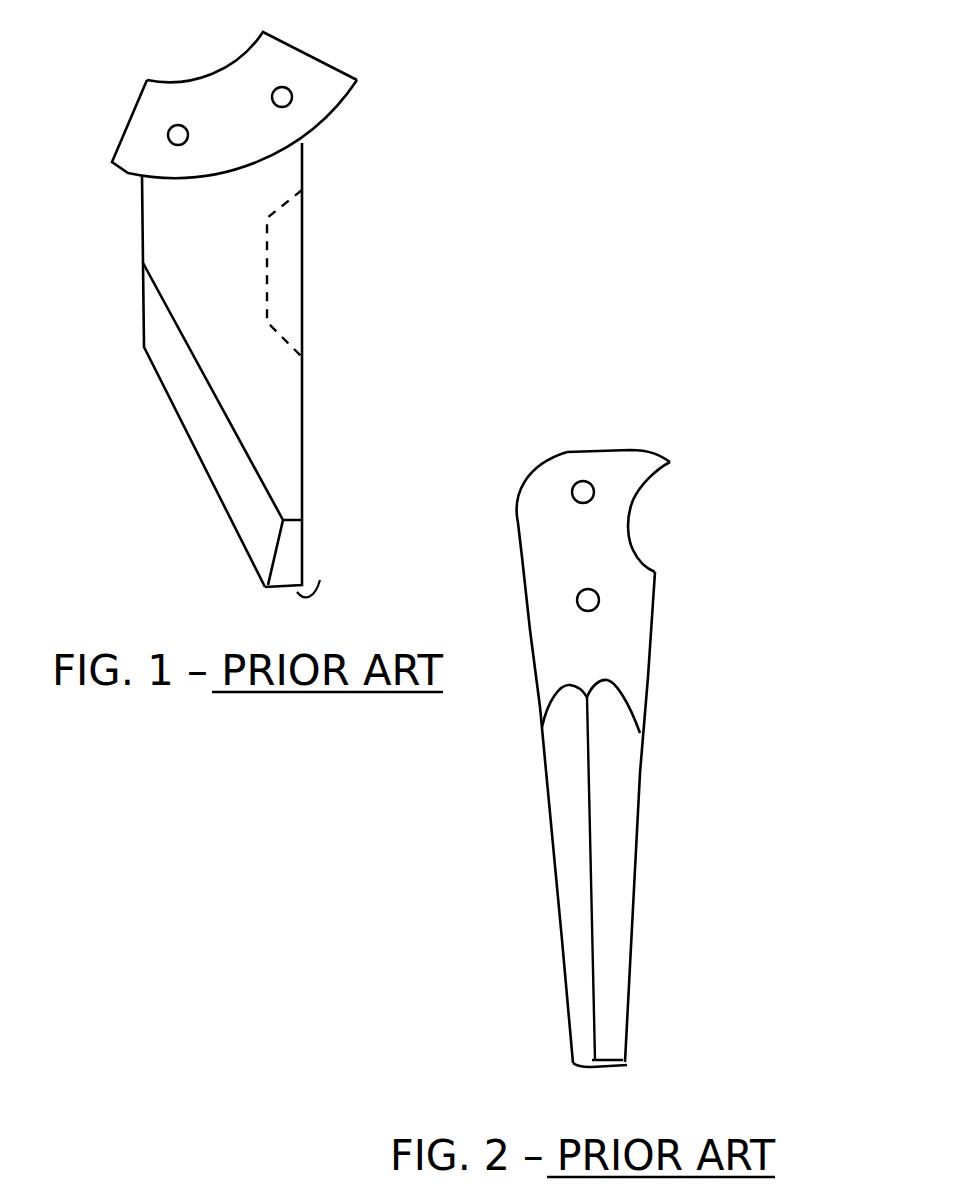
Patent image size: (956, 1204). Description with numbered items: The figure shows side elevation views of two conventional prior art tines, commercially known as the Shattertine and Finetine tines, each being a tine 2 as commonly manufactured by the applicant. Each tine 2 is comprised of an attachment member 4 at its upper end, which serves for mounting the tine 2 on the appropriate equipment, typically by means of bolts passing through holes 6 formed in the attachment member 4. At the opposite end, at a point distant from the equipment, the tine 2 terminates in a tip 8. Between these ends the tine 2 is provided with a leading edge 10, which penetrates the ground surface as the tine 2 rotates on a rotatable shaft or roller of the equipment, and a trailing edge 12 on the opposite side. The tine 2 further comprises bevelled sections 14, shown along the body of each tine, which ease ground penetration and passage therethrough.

In FIG. 1, the tine 2 is at (420, 168).
In FIG. 2, the tine 2 is at (465, 905).
In FIG. 1, the attachment member 4 is at (217, 97).
In FIG. 2, the attachment member 4 is at (620, 473).
In FIG. 1, the holes 6 is at (286, 92).
In FIG. 2, the holes 6 is at (599, 600).
In FIG. 1, the tip 8 is at (322, 578).
In FIG. 2, the tip 8 is at (617, 1068).
In FIG. 1, the leading edge 10 is at (160, 373).
In FIG. 2, the leading edge 10 is at (642, 763).
In FIG. 1, the trailing edge 12 is at (302, 400).
In FIG. 2, the trailing edge 12 is at (542, 763).
In FIG. 1, the bevelled sections 14 is at (202, 428).
In FIG. 2, the bevelled sections 14 is at (570, 848).